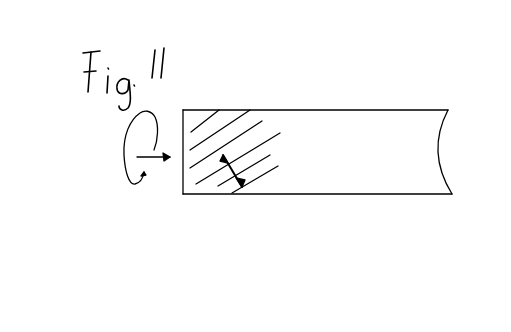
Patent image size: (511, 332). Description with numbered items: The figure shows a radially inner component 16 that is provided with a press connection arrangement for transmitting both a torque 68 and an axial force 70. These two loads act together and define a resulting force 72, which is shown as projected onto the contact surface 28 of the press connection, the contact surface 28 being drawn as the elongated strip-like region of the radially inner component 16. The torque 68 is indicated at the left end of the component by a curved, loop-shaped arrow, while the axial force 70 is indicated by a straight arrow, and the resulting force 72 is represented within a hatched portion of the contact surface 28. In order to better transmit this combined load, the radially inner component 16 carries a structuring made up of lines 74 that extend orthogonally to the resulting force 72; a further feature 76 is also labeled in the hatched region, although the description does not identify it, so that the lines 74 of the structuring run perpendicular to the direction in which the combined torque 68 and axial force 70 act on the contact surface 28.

The radially inner component 16 is at (337, 122).
The contact surface 28 is at (407, 183).
The torque 68 is at (125, 150).
The axial force 70 is at (142, 167).
The resulting force 72 is at (232, 168).
The lines 74 is at (268, 150).
The coating surface 76 is at (255, 140).